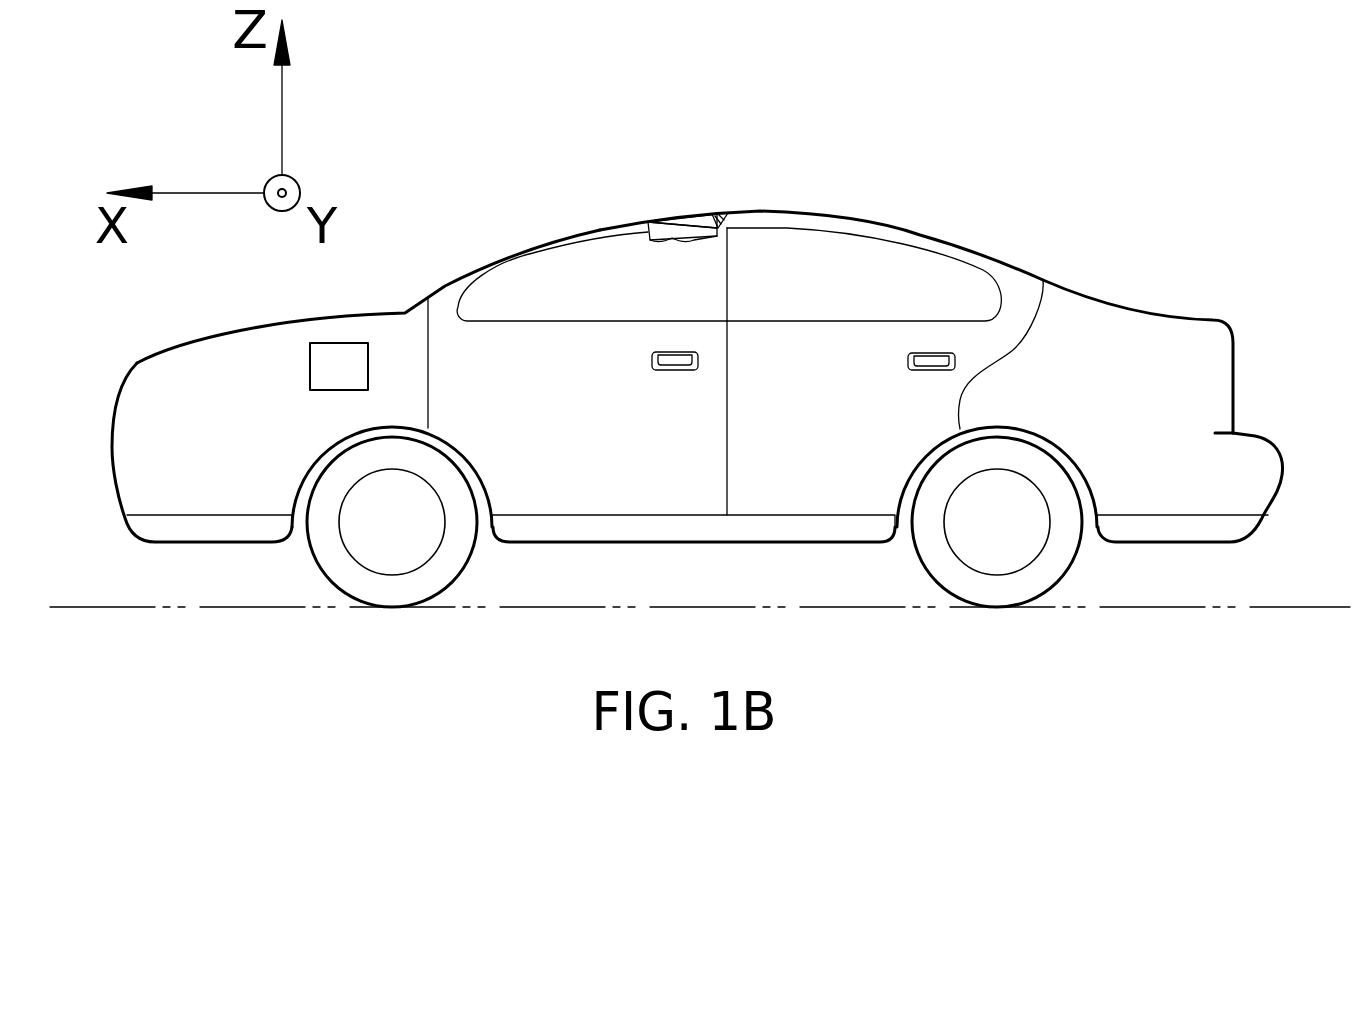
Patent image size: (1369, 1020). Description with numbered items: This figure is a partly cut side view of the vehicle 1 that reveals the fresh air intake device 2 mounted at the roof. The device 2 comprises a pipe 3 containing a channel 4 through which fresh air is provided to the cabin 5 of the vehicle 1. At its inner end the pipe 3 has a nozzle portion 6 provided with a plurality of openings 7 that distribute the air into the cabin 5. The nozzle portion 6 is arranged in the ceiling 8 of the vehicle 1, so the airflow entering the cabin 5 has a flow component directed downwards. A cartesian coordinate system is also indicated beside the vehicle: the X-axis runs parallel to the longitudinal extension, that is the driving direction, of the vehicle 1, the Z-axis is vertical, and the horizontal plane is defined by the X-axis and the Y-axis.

The vehicle 1 is at (802, 125).
The fresh air intake device 2 is at (691, 207).
The pipe 3 is at (650, 233).
The channel 4 is at (663, 228).
The cabin 5 is at (580, 292).
The nozzle portion 6 is at (715, 216).
The openings 7 is at (690, 240).
The ceiling 8 is at (749, 258).